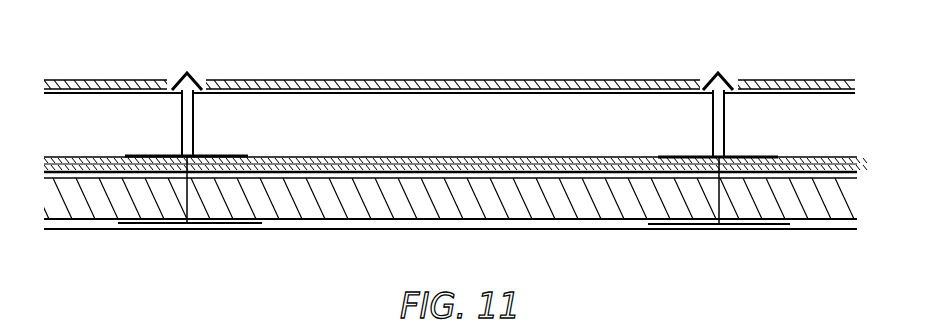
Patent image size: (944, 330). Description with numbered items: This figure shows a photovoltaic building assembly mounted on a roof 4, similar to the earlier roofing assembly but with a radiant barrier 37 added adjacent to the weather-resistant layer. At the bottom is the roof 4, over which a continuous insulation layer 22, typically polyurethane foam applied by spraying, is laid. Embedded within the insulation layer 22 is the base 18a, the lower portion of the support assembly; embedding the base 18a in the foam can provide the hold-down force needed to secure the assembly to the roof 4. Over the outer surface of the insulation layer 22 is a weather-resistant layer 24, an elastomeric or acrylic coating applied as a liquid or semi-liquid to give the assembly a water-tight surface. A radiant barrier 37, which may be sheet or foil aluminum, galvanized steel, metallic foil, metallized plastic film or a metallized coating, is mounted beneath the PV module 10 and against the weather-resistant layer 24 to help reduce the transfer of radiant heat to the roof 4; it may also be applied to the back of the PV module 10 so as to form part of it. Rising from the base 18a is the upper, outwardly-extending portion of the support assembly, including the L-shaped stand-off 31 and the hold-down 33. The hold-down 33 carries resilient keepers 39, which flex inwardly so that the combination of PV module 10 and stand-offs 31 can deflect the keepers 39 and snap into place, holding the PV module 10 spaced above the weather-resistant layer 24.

The PV module 10 is at (405, 80).
The resilient keeper 39 is at (183, 75).
The stand-off 31 is at (180, 125).
The hold-down 33 is at (196, 126).
The radiant barrier 37 is at (822, 160).
The weather-resistant layer 24 is at (858, 165).
The insulation layer 22 is at (568, 207).
The roof 4 is at (494, 230).
The base 18a is at (783, 226).